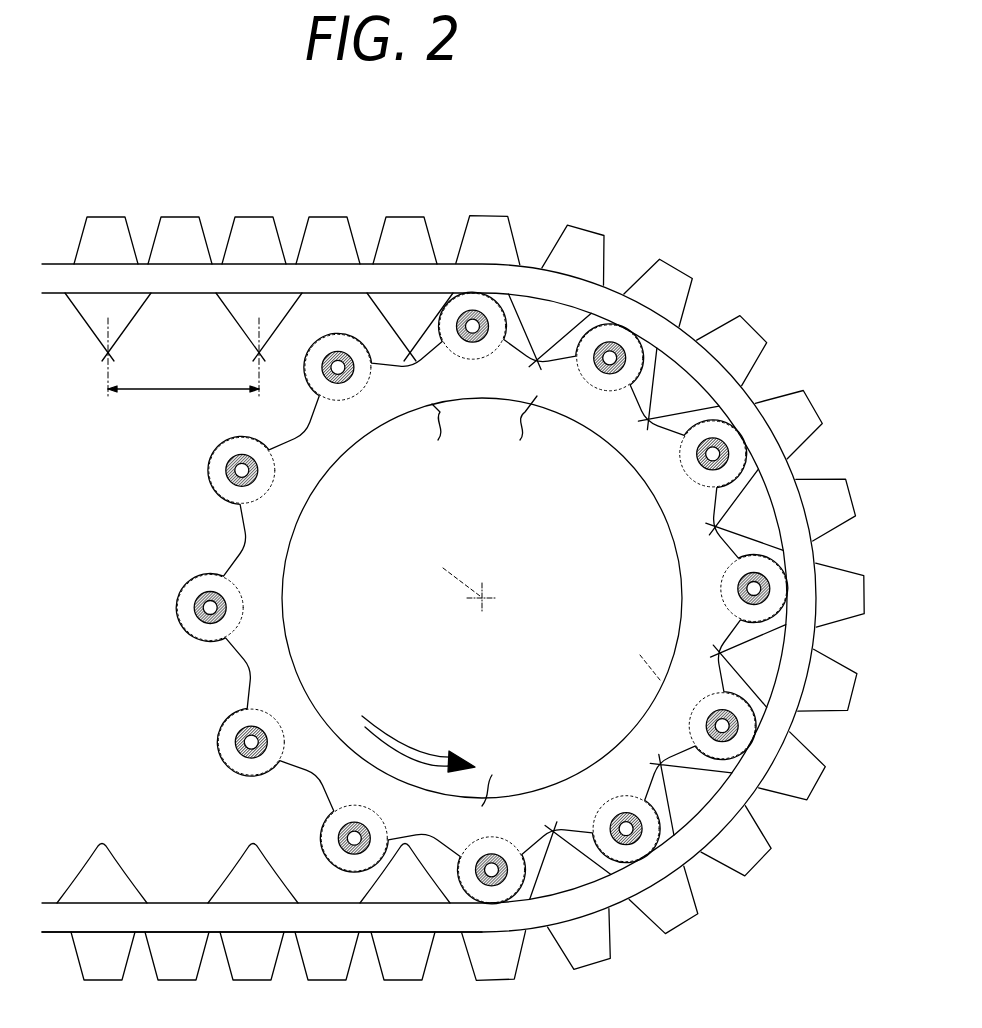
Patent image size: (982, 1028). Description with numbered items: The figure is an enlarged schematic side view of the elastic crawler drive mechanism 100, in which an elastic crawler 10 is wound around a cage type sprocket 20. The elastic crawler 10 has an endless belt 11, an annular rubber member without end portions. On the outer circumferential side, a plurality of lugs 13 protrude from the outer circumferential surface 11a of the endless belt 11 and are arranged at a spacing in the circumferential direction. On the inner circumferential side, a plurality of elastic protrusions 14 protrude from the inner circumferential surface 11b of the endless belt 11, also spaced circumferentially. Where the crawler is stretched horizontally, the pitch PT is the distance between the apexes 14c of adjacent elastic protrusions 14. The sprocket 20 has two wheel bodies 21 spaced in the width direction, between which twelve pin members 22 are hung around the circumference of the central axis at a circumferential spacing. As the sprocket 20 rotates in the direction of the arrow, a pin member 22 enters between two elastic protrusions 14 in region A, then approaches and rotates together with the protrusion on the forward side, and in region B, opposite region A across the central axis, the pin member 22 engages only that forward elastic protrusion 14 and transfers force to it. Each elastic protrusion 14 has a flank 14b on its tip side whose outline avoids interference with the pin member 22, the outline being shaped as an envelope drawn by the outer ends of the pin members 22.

The elastic crawler drive mechanism 100 is at (207, 157).
The elastic crawler 10 is at (358, 207).
The endless belt 11 is at (443, 264).
The outer circumferential surface 11a is at (207, 933).
The inner circumferential surface 11b is at (180, 903).
The lug 13 is at (503, 227).
The elastic protrusion 14 is at (668, 412).
The flank 14b is at (297, 857).
The apex 14c is at (110, 354).
The sprocket 20 is at (190, 520).
The wheel body 21 is at (273, 670).
The pin member 22 is at (645, 505).